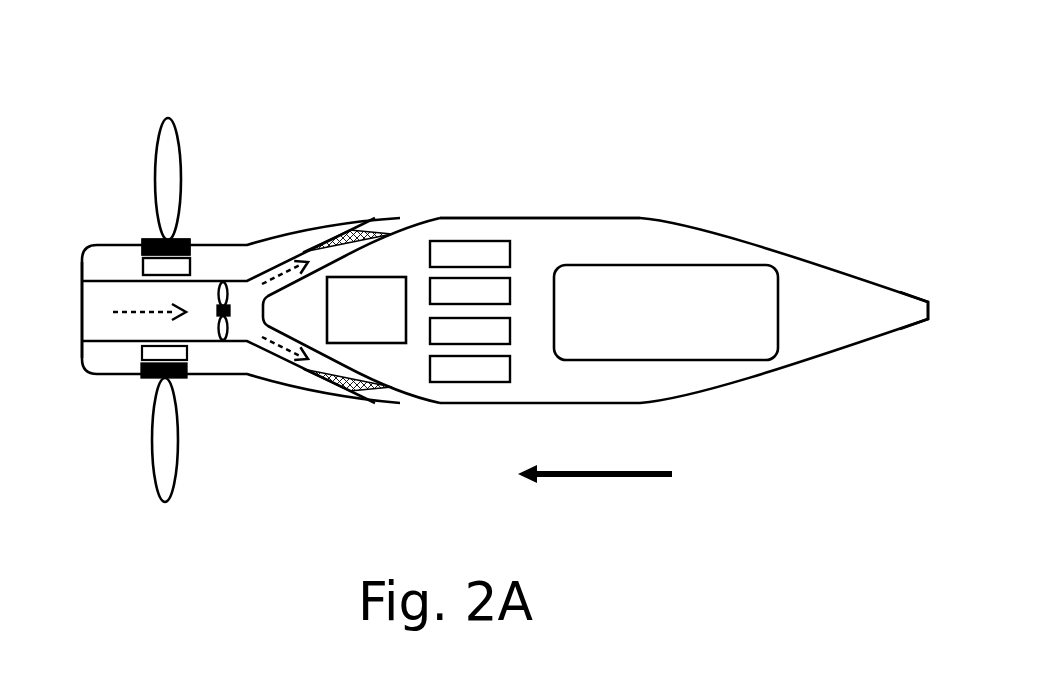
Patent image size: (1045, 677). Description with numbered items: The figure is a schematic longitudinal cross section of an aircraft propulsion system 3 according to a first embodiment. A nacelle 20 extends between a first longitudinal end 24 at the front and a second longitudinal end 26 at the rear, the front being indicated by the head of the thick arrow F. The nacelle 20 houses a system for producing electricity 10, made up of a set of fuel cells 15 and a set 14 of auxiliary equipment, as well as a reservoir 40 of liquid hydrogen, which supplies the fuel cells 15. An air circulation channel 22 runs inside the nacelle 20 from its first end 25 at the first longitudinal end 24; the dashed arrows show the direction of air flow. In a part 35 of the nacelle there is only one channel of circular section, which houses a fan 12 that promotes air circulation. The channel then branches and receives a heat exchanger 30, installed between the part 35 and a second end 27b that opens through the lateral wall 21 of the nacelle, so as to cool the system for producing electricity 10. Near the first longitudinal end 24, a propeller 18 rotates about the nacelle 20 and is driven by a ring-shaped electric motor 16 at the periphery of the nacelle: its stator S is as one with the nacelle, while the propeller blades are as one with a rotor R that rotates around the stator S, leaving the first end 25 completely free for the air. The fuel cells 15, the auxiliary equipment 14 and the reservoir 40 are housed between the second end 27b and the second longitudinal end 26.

The aircraft propulsion system 3 is at (866, 151).
The system for producing electricity 10 is at (368, 131).
The fan 12 is at (227, 334).
The set of equipment auxiliary to the fuel cells 14 is at (398, 344).
The set of fuel cells 15 is at (517, 228).
The electric motor 16 is at (128, 252).
The propeller 18 is at (157, 143).
The nacelle 20 is at (699, 227).
The lateral wall of the nacelle 21 is at (593, 212).
The air circulation channel 22 is at (117, 300).
The first longitudinal end of the nacelle 24 is at (78, 415).
The first end of the air circulation channel 25 is at (73, 332).
The second longitudinal end of the nacelle 26 is at (926, 378).
The second end of the air circulation channel 27b is at (404, 214).
The heat exchanger 30 is at (378, 392).
The part of the nacelle 35 is at (87, 92).
The reservoir of dihydrogen 40 is at (752, 361).
The rotor R is at (188, 239).
The stator S is at (190, 263).
The arrow indicating nacelle orientation F is at (595, 458).